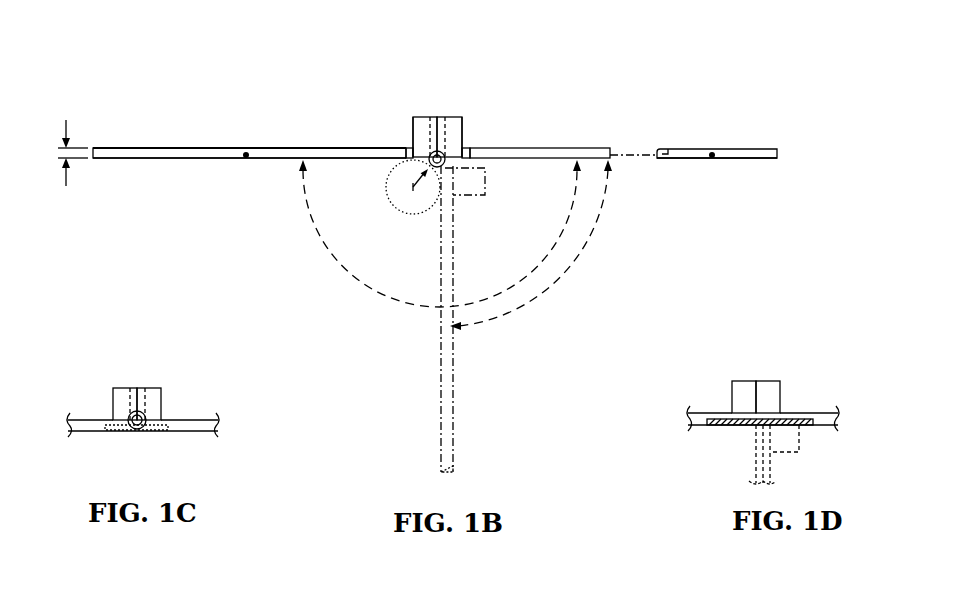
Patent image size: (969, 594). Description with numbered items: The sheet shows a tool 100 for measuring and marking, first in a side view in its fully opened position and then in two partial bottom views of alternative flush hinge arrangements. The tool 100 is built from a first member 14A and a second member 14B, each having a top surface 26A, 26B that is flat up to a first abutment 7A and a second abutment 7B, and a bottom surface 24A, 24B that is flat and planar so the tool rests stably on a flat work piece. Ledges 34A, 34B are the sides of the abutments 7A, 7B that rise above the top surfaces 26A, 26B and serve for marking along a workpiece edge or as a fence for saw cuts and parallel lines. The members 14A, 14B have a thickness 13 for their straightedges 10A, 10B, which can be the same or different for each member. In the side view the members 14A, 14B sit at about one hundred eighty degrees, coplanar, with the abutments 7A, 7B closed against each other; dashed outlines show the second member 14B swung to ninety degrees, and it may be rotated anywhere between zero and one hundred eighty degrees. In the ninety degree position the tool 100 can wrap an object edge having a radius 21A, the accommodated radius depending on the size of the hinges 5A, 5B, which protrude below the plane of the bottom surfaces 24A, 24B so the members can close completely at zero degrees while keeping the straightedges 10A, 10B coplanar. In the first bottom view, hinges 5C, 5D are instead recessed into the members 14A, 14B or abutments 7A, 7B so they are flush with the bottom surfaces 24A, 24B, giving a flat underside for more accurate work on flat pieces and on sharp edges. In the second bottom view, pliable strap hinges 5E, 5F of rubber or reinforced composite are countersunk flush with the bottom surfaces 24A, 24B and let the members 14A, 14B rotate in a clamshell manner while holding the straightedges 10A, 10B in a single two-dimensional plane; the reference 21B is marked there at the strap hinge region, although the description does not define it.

In FIG. 1B, the tool 100 is at (785, 40).
In FIG. 1C, the tool 100 is at (240, 353).
In FIG. 1D, the tool 100 is at (843, 341).
In FIG. 1B, the thickness 13 is at (73, 143).
In FIG. 1B, the first member 14A is at (262, 148).
In FIG. 1C, the first member 14A is at (78, 420).
In FIG. 1D, the first member 14A is at (697, 413).
In FIG. 1B, the second member 14B is at (540, 148).
In FIG. 1C, the second member 14B is at (190, 420).
In FIG. 1D, the second member 14B is at (812, 413).
In FIG. 1B, the top surface 26A is at (143, 148).
In FIG. 1B, the top surface 26B is at (757, 148).
In FIG. 1B, the bottom surface 24A is at (155, 158).
In FIG. 1C, the bottom surface 24A is at (80, 432).
In FIG. 1D, the bottom surface 24A is at (697, 425).
In FIG. 1B, the bottom surface 24B is at (680, 160).
In FIG. 1C, the bottom surface 24B is at (195, 432).
In FIG. 1D, the bottom surface 24B is at (827, 425).
In FIG. 1B, the straightedge 10A is at (246, 158).
In FIG. 1B, the straightedge 10B is at (712, 158).
In FIG. 1B, the first abutment 7A is at (423, 117).
In FIG. 1C, the first abutment 7A is at (125, 388).
In FIG. 1D, the first abutment 7A is at (744, 397).
In FIG. 1B, the second abutment 7B is at (455, 117).
In FIG. 1C, the second abutment 7B is at (157, 388).
In FIG. 1D, the second abutment 7B is at (768, 397).
In FIG. 1B, the ledge 34A is at (406, 137).
In FIG. 1B, the ledge 34B is at (470, 133).
In FIG. 1B, the radius 21A is at (413, 187).
In FIG. 1D, the second rotation axis 21B is at (749, 434).
In FIG. 1B, the hinge 5A is at (478, 180).
In FIG. 1B, the hinge 5B is at (445, 165).
In FIG. 1C, the hinge 5C is at (106, 450).
In FIG. 1C, the hinge 5D is at (133, 430).
In FIG. 1D, the pliable strap hinge 5E is at (710, 446).
In FIG. 1D, the pliable strap hinge 5F is at (720, 425).